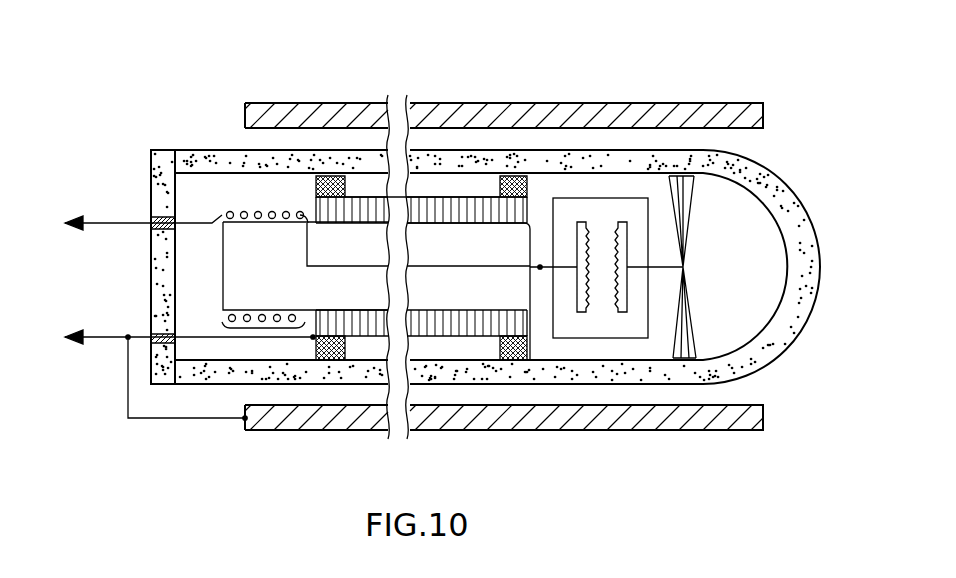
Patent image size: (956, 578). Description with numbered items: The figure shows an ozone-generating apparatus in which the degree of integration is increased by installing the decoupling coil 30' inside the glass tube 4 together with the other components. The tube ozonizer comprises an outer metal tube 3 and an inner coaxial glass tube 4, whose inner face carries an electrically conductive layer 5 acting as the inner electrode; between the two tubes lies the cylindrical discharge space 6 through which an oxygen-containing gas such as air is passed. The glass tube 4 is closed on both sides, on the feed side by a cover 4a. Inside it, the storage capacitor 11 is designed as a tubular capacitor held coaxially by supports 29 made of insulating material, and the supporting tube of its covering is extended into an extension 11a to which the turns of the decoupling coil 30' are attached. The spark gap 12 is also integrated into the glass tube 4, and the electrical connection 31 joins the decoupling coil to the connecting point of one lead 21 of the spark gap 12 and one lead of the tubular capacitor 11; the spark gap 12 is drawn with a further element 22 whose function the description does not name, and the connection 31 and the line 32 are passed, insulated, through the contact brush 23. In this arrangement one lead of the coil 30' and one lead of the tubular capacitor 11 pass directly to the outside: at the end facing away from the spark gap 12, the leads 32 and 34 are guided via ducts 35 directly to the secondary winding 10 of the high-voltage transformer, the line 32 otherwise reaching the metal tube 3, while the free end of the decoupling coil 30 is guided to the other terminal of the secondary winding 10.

The outer metal tube 3 is at (737, 112).
The inner coaxial glass tube 4 is at (507, 167).
The cover 4a is at (158, 293).
The electrically conductive layer 5 is at (443, 178).
The cylindrical discharge space 6 is at (570, 140).
The secondary winding 10 is at (90, 296).
The storage capacitor 11 is at (317, 358).
The extension of the supporting tube 11a is at (272, 330).
The spark gap 12 is at (580, 322).
The lead of the spark gap 21 is at (684, 262).
The electrode lead 22 is at (561, 267).
The contact brush 23 is at (686, 260).
The supports 29 is at (338, 358).
The decoupling coil 30 is at (268, 218).
The decoupling coil 30' is at (236, 405).
The electrical connection 31 is at (482, 268).
The line 32 is at (102, 339).
The lead 34 is at (118, 224).
The ducts 35 is at (155, 215).